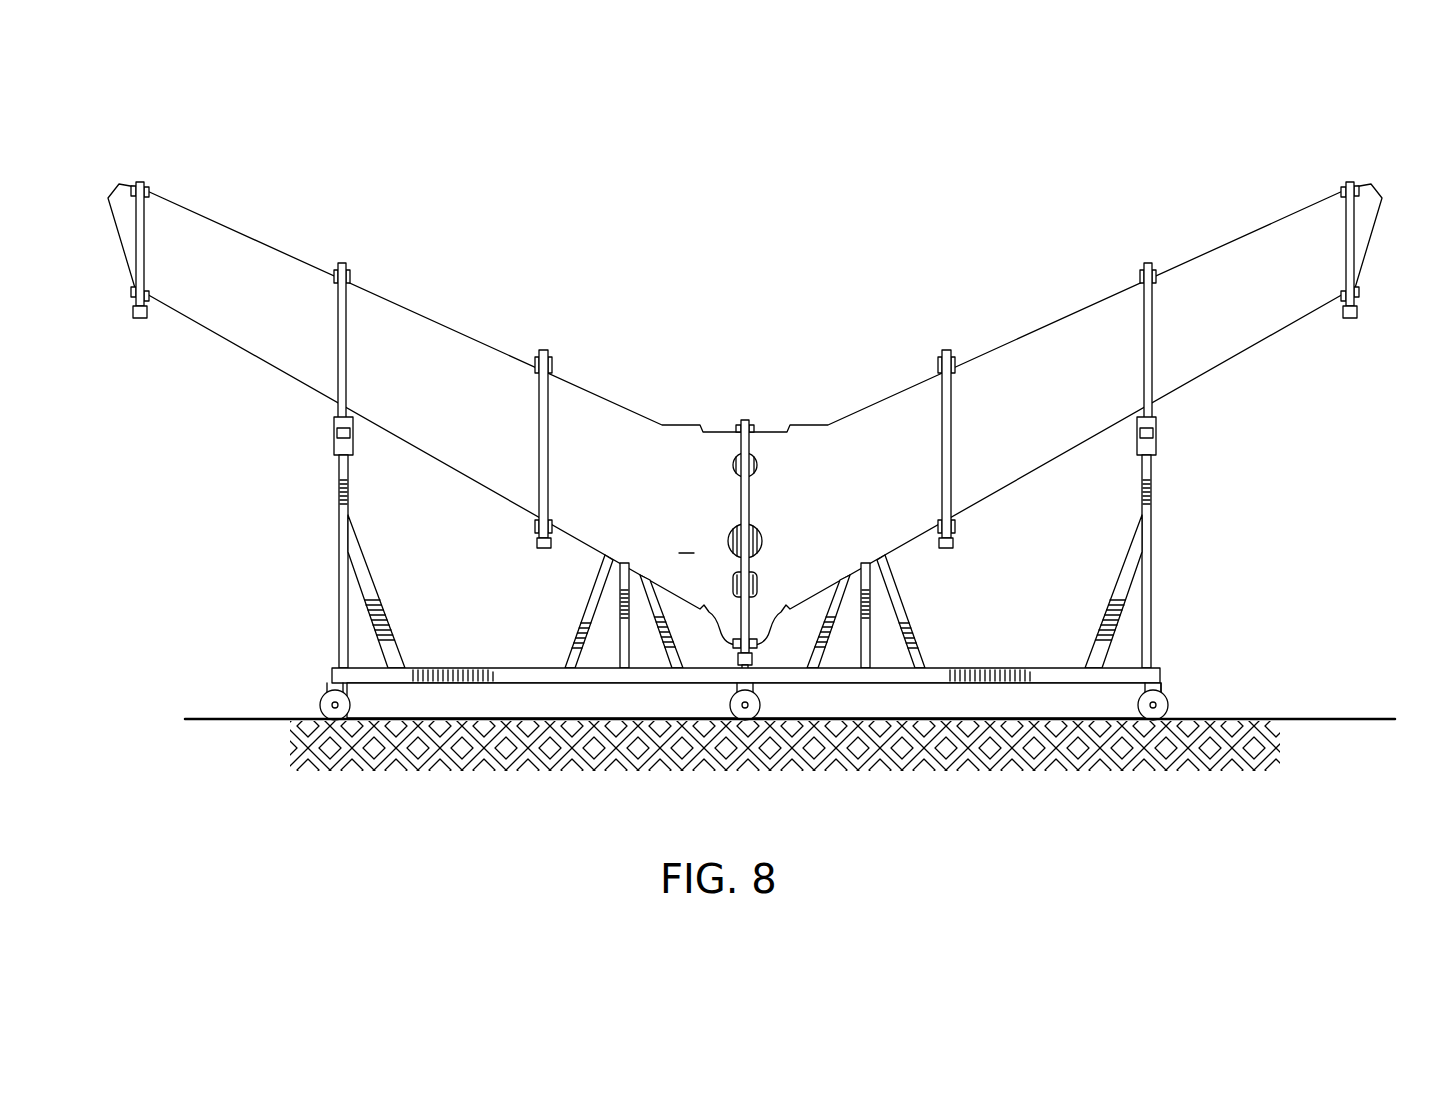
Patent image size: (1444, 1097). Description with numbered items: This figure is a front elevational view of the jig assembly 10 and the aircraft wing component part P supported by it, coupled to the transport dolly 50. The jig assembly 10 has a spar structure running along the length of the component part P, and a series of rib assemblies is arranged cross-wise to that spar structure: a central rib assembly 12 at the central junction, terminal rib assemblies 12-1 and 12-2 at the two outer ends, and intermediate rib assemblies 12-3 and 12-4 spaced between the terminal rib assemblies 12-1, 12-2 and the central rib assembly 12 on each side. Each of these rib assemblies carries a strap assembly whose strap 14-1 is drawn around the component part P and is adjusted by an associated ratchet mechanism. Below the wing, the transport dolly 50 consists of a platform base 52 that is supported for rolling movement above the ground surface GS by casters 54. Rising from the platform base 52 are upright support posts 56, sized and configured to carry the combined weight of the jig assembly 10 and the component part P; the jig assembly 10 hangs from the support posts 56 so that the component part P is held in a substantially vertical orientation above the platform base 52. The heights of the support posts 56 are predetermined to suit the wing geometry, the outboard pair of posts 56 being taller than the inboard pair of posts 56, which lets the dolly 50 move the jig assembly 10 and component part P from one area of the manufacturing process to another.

The jig assembly 10 is at (157, 189).
The central rib assembly 12 is at (757, 420).
The terminal rib assembly 12-1 is at (152, 310).
The terminal rib assembly 12-2 is at (1340, 310).
The intermediate rib assembly 12-3 is at (352, 266).
The intermediate rib assembly 12-4 is at (1162, 266).
The strap 14-1 is at (782, 428).
The component part P is at (686, 543).
The transport dolly 50 is at (753, 648).
The platform base 52 is at (545, 667).
The casters 54 is at (320, 700).
The upright support posts 56 is at (344, 516).
The ground surface GS is at (1325, 716).